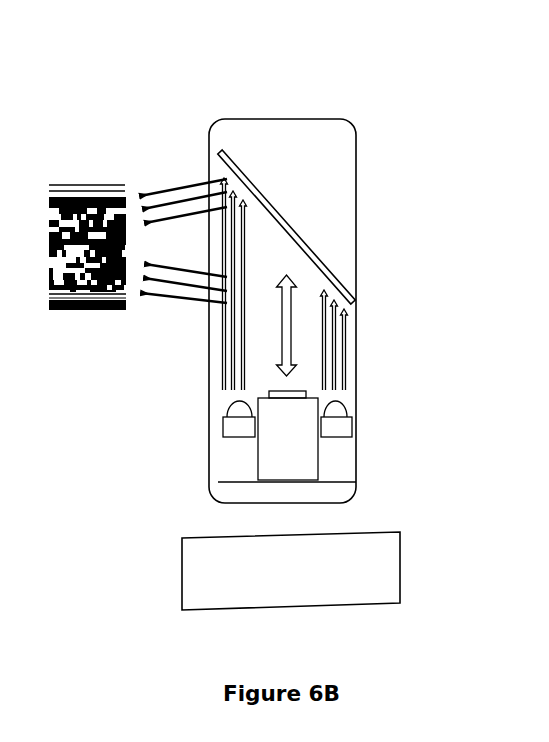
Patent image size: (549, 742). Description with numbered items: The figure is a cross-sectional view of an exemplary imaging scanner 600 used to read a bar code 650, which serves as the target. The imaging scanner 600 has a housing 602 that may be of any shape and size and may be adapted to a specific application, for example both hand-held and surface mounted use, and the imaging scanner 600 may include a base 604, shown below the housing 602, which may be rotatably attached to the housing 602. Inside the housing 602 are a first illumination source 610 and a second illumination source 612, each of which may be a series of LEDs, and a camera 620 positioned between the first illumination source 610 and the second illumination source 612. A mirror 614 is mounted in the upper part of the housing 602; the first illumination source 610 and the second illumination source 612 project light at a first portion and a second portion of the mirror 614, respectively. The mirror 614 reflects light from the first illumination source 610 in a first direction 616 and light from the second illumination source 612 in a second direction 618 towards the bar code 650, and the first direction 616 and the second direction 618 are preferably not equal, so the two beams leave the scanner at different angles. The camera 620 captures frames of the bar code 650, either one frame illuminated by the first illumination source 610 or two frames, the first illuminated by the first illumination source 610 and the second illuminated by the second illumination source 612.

The imaging scanner 600 is at (299, 80).
The housing 602 is at (353, 137).
The base 604 is at (182, 572).
The first illumination source 610 is at (223, 427).
The second illumination source 612 is at (353, 422).
The mirror 614 is at (315, 253).
The first direction 616 is at (181, 300).
The second direction 618 is at (173, 191).
The camera 620 is at (258, 472).
The bar code 650 is at (84, 184).